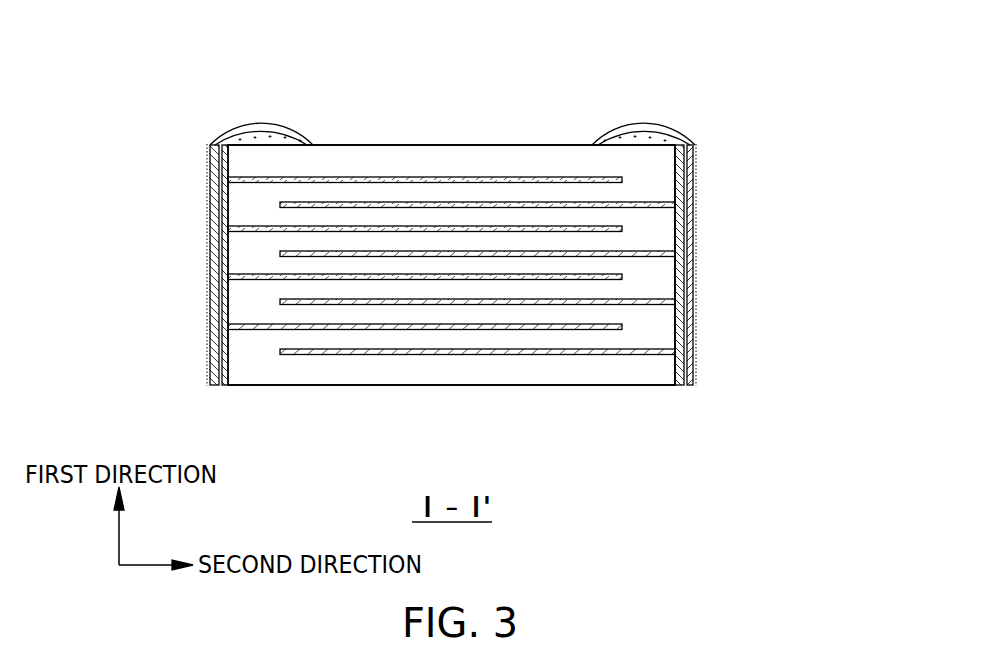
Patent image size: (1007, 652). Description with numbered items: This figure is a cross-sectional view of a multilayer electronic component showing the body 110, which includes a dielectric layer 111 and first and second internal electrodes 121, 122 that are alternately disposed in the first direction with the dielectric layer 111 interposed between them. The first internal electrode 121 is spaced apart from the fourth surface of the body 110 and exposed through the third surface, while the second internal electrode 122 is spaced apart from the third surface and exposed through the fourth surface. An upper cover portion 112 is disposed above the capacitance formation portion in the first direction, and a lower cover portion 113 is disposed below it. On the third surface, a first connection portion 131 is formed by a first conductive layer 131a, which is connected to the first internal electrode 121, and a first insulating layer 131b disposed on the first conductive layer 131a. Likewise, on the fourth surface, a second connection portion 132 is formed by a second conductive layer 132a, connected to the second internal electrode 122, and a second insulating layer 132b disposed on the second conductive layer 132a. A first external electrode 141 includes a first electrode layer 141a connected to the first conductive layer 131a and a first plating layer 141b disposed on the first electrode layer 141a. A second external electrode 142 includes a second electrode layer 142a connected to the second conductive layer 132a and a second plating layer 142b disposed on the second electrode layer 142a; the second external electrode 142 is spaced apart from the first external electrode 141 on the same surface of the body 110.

The body 110 is at (408, 145).
The dielectric layer 111 is at (503, 193).
The upper cover portion 112 is at (339, 158).
The lower cover portion 113 is at (353, 375).
The first internal electrode 121 is at (462, 178).
The second internal electrode 122 is at (558, 205).
The first connection portion 131 is at (131, 265).
The first conductive layer 131a is at (214, 218).
The first insulating layer 131b is at (212, 278).
The second connection portion 132 is at (774, 265).
The second conductive layer 132a is at (690, 218).
The second insulating layer 132b is at (690, 278).
The first external electrode 141 is at (179, 118).
The first electrode layer 141a is at (242, 133).
The first plating layer 141b is at (255, 123).
The second external electrode 142 is at (727, 119).
The second electrode layer 142a is at (662, 136).
The second plating layer 142b is at (655, 122).